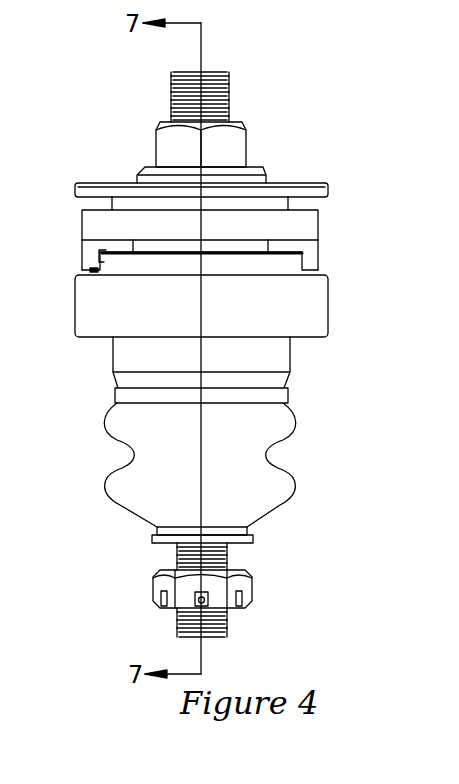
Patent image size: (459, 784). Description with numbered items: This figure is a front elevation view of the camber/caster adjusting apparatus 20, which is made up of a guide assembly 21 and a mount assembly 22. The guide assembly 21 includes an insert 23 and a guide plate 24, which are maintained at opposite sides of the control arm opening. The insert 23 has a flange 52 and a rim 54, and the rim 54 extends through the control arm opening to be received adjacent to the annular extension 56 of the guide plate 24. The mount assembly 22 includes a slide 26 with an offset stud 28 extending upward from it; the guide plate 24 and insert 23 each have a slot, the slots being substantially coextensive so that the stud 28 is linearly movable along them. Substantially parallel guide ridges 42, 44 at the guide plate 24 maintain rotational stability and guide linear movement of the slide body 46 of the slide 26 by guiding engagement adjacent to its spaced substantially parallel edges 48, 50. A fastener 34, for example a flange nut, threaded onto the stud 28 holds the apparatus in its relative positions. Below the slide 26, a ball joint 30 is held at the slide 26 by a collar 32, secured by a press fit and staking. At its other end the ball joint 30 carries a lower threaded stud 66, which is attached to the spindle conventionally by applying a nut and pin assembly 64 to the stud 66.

The camber/caster adjusting apparatus 20 is at (133, 126).
The guide assembly 21 is at (313, 148).
The mount assembly 22 is at (308, 363).
The insert 23 is at (75, 188).
The guide plate 24 is at (82, 213).
The slide 26 is at (127, 265).
The offset stud 28 is at (228, 98).
The ball joint 30 is at (115, 362).
The collar 32 is at (320, 325).
The fastener 34 is at (247, 134).
The guide ridge 42 is at (307, 256).
The guide ridge 44 is at (100, 251).
The slide body 46 is at (262, 263).
The edge 48 is at (300, 257).
The edge 50 is at (85, 270).
The flange 52 is at (110, 183).
The rim 54 is at (290, 203).
The annular extension 56 is at (82, 230).
The nut and pin assembly 64 is at (252, 590).
The lower threaded stud 66 is at (228, 628).